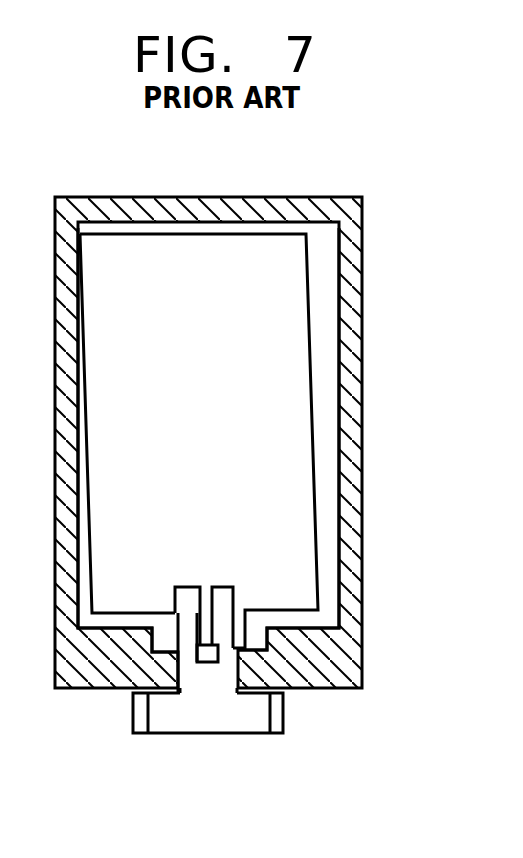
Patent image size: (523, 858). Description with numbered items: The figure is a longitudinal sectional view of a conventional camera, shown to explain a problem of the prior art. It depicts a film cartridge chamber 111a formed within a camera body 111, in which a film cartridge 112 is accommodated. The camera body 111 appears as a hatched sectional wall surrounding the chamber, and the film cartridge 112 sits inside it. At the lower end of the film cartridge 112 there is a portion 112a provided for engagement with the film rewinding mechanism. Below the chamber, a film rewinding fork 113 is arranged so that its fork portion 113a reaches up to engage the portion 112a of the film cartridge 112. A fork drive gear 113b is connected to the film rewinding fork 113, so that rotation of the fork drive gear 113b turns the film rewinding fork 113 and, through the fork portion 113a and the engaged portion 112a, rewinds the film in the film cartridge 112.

The camera body 111 is at (355, 300).
The film cartridge chamber 111a is at (328, 405).
The film cartridge 112 is at (243, 247).
The engagement portion 112a is at (238, 593).
The film rewinding fork 113 is at (238, 720).
The fork portion 113a is at (228, 645).
The fork drive gear 113b is at (283, 713).